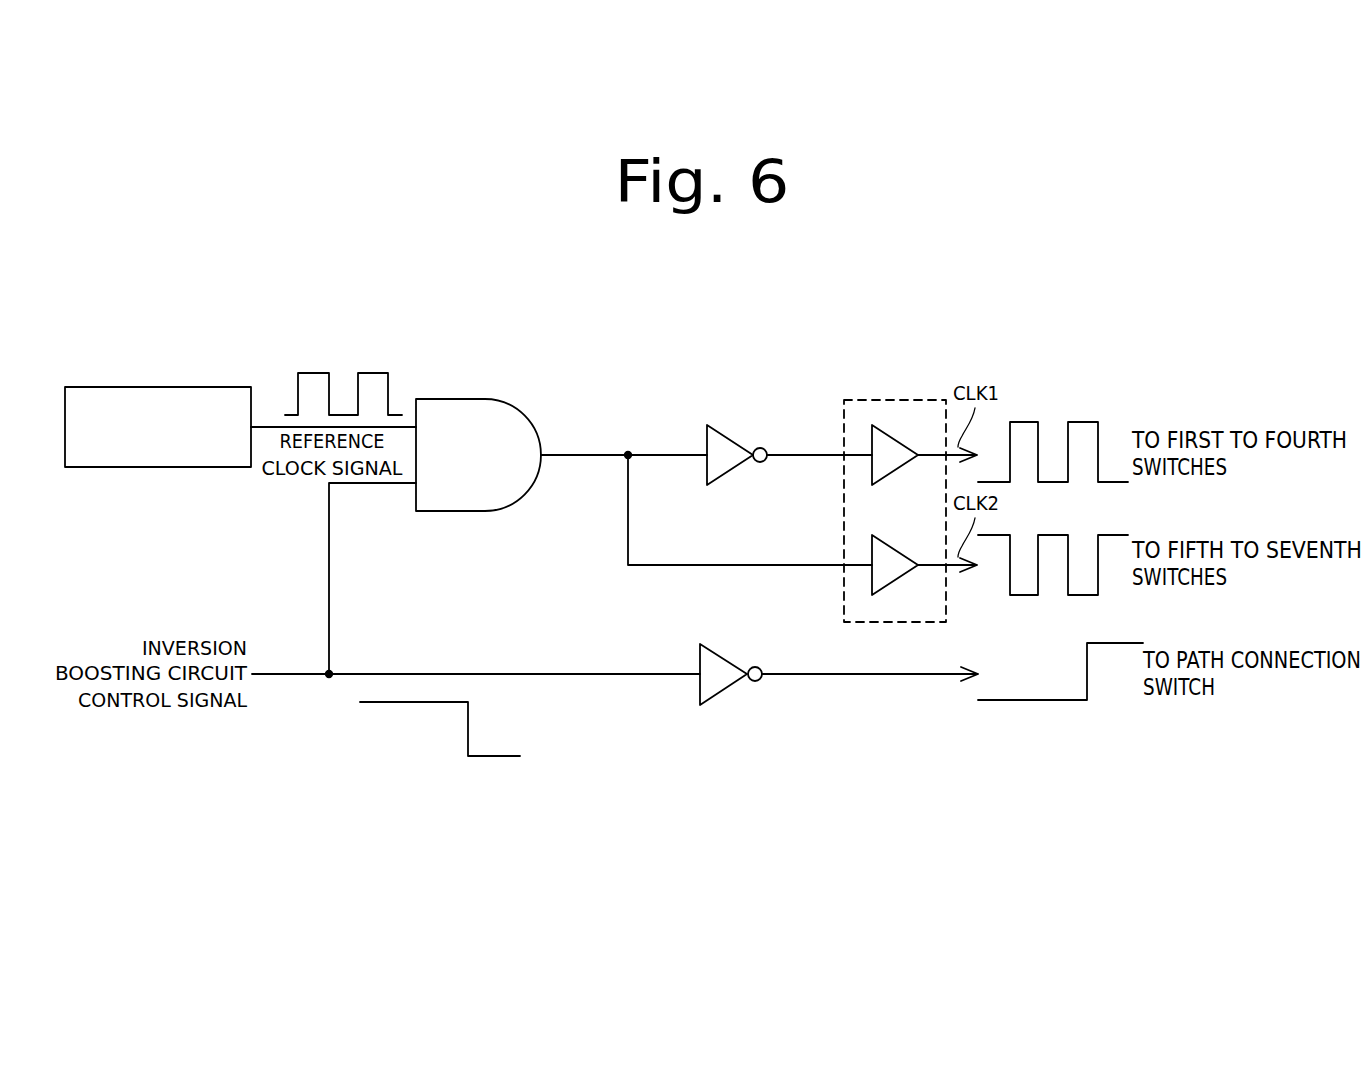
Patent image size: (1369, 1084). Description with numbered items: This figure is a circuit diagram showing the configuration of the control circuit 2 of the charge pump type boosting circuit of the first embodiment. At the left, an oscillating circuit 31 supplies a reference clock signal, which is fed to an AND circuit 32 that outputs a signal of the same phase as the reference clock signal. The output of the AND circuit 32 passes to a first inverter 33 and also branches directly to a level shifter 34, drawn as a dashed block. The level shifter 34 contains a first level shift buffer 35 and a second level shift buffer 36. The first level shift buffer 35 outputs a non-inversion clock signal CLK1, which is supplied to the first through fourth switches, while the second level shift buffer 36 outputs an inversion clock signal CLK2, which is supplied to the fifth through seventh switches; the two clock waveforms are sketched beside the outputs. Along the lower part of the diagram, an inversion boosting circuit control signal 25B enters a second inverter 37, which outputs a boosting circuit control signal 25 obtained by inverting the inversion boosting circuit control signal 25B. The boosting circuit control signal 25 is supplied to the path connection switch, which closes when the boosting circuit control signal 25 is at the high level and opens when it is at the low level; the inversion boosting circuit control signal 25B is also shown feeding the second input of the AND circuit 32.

The control circuit 2 is at (872, 292).
The oscillating circuit 31 is at (158, 387).
The AND circuit 32 is at (513, 408).
The first inverter 33 is at (730, 431).
The level shifter 34 is at (897, 400).
The first level shift buffer 35 is at (872, 465).
The second level shift buffer 36 is at (872, 575).
The second inverter 37 is at (724, 656).
The inversion boosting circuit control signal 25B is at (420, 672).
The boosting circuit control signal 25 is at (897, 676).